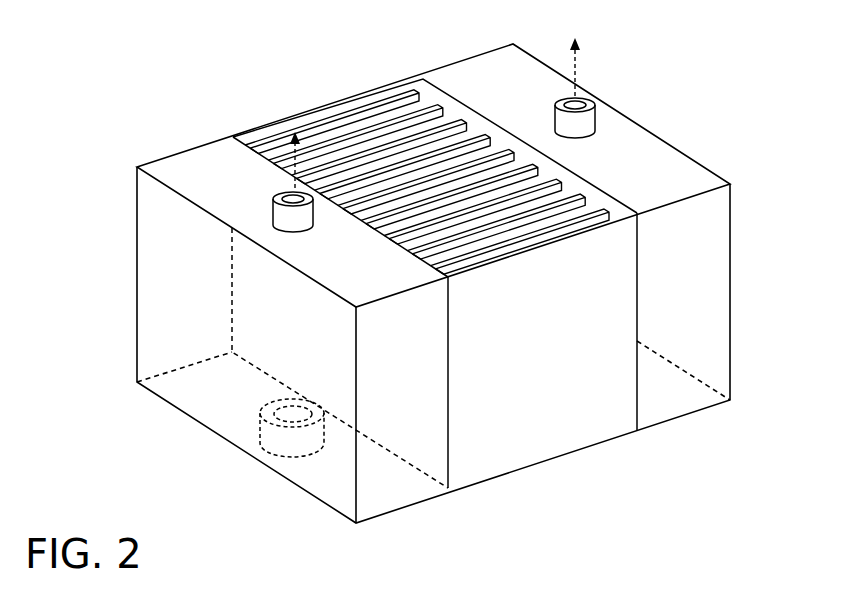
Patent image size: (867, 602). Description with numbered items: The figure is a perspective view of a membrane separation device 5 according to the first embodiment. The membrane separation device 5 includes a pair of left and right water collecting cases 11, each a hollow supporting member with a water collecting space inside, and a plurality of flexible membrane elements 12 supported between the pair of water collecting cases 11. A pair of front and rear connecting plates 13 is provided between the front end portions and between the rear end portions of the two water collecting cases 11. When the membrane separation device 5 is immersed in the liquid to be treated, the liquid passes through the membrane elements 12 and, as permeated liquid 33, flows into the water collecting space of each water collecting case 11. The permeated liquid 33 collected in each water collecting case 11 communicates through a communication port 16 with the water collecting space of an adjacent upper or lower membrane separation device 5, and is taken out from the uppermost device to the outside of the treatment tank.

The membrane separation device 5 is at (131, 115).
The water collecting case 11 is at (150, 202).
The membrane element 12 is at (455, 137).
The connecting plate 13 is at (334, 110).
The communication port 16 is at (286, 192).
The permeated liquid 33 is at (290, 140).